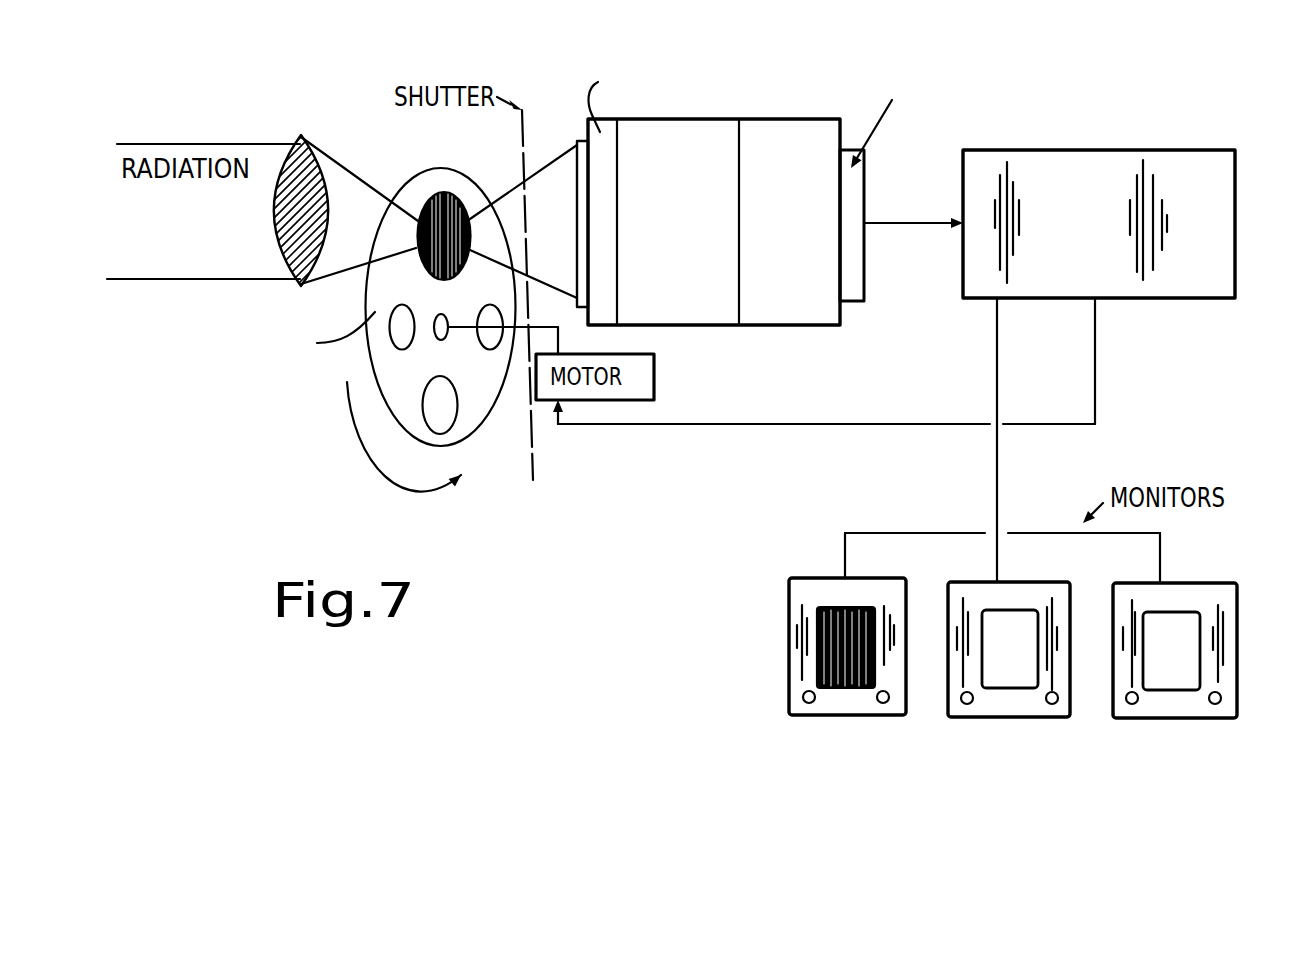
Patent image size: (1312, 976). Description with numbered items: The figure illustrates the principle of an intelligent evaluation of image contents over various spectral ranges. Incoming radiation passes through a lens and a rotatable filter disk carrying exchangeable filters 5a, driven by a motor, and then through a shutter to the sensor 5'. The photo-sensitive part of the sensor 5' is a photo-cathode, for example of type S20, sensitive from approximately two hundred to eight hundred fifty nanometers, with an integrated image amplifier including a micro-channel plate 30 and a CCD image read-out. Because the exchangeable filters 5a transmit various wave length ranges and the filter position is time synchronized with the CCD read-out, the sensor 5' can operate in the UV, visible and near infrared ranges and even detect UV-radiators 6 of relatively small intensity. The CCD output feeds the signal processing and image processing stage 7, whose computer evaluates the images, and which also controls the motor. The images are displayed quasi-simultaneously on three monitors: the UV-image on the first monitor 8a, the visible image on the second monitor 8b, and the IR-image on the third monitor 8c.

The sensor 5' is at (760, 199).
The micro-channel plate 30 is at (798, 254).
The UV-radiators 6 is at (1099, 177).
The image processing stage 7 is at (1164, 188).
The exchangeable filters 5a is at (437, 405).
The first monitor 8a is at (803, 645).
The second monitor 8b is at (1050, 667).
The third monitor 8c is at (1218, 648).